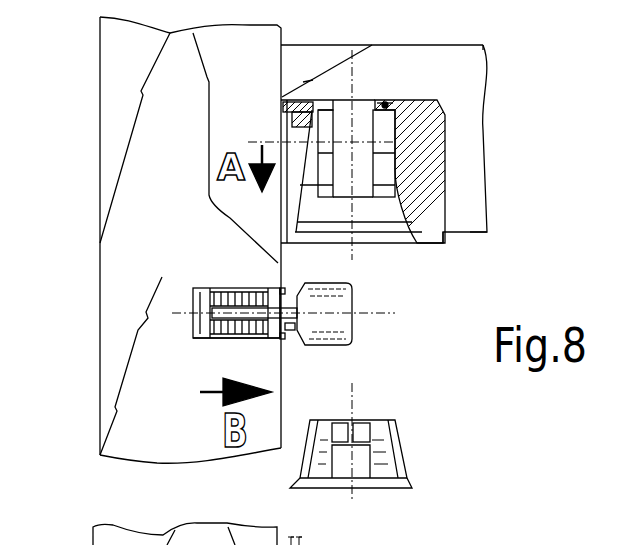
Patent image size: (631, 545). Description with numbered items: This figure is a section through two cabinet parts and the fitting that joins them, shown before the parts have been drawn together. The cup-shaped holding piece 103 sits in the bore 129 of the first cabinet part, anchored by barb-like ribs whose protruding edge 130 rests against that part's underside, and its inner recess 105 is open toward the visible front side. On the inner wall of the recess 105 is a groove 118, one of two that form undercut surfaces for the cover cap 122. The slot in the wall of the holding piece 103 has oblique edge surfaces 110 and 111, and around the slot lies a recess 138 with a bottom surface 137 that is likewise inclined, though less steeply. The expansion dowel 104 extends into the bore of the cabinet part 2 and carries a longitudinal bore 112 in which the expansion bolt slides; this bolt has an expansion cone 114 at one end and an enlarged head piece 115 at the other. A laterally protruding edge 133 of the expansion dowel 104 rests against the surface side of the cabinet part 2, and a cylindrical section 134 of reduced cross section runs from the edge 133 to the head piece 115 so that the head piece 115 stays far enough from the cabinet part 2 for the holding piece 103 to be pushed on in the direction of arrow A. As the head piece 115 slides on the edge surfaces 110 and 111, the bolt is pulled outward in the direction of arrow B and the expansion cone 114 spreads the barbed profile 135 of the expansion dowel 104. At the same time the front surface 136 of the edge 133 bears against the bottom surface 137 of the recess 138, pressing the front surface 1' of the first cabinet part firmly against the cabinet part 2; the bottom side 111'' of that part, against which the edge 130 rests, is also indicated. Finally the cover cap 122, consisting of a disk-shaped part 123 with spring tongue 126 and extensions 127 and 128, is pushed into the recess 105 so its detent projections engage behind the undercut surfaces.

The front surface 1' is at (382, 22).
The cabinet part 2 is at (97, 167).
The holding piece 103 is at (466, 163).
The expansion dowel 104 is at (235, 288).
The inner recess 105 is at (385, 104).
The edge surface 110 is at (308, 208).
The edge surface 111 is at (364, 166).
The housing flange 111'' is at (487, 263).
The longitudinal bore 112 is at (263, 288).
The expansion cone 114 is at (202, 291).
The head piece 115 is at (340, 328).
The groove 118 is at (332, 110).
The cover cap 122 is at (407, 468).
The disk-shaped part 123 is at (387, 489).
The spring tongue 126 is at (345, 470).
The extension 127 is at (385, 437).
The extension 128 is at (323, 424).
The bore 129 is at (442, 132).
The edge 130 is at (447, 244).
The laterally protruding edge 133 is at (280, 342).
The cylindrical section 134 is at (289, 331).
The barbed profile 135 is at (225, 337).
The front surface 136 is at (290, 290).
The bottom surface 137 is at (292, 126).
The recess 138 is at (285, 115).